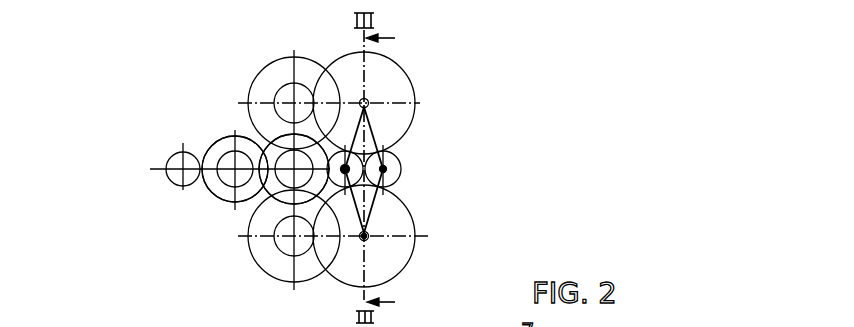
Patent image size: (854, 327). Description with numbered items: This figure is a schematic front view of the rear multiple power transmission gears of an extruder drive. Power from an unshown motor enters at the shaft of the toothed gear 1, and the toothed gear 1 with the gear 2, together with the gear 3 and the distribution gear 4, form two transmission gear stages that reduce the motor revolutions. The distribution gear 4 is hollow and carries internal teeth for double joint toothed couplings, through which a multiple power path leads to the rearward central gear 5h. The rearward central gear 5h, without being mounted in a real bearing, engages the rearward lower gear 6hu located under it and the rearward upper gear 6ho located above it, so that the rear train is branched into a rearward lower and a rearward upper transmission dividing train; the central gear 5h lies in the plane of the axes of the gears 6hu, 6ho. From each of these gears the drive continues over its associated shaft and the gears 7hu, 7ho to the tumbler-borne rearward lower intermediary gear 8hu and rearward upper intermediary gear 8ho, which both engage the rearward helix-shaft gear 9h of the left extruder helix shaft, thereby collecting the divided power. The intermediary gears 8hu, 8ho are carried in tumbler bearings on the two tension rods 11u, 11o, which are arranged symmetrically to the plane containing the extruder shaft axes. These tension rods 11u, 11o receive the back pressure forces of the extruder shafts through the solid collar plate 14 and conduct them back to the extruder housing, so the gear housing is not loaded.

The toothed gear 1 is at (131, 183).
The gear 2 is at (165, 196).
The gear 3 is at (163, 156).
The distribution gear 4 is at (193, 137).
The rearward central gear 5h is at (251, 230).
The rearward upper gear 6ho is at (191, 92).
The rearward lower gear 6hu is at (286, 258).
The rearward upper gear 7ho is at (308, 65).
The rearward lower gear 7hu is at (310, 271).
The rearward upper intermediary gear 8ho is at (435, 93).
The rearward lower intermediary gear 8hu is at (375, 256).
The rearward helix-shaft gear 9h is at (330, 169).
The upper tension rod 11o is at (459, 91).
The lower tension rod 11u is at (459, 243).
The collar plate 14 is at (357, 205).